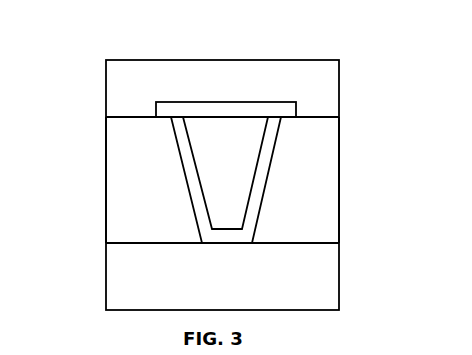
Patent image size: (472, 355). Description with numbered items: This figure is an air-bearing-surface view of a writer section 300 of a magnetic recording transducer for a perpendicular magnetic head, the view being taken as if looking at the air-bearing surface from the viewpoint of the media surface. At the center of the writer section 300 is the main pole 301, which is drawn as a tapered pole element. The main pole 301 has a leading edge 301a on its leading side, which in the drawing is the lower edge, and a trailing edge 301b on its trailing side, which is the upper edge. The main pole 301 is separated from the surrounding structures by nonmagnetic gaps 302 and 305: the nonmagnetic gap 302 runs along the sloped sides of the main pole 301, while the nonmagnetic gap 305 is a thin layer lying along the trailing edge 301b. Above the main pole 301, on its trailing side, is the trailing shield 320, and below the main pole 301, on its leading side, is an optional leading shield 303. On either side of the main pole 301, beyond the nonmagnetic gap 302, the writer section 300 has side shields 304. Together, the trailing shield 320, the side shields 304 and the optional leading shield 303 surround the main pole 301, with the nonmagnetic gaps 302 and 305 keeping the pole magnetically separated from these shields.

The writer section 300 is at (454, 37).
The trailing shield 320 is at (210, 60).
The nonmagnetic gap 305 is at (297, 102).
The main pole 301 is at (230, 202).
The leading edge 301a is at (220, 230).
The trailing edge 301b is at (233, 117).
The nonmagnetic gap 302 is at (183, 155).
The side shields 304 is at (106, 205).
The optional leading shield 303 is at (339, 278).